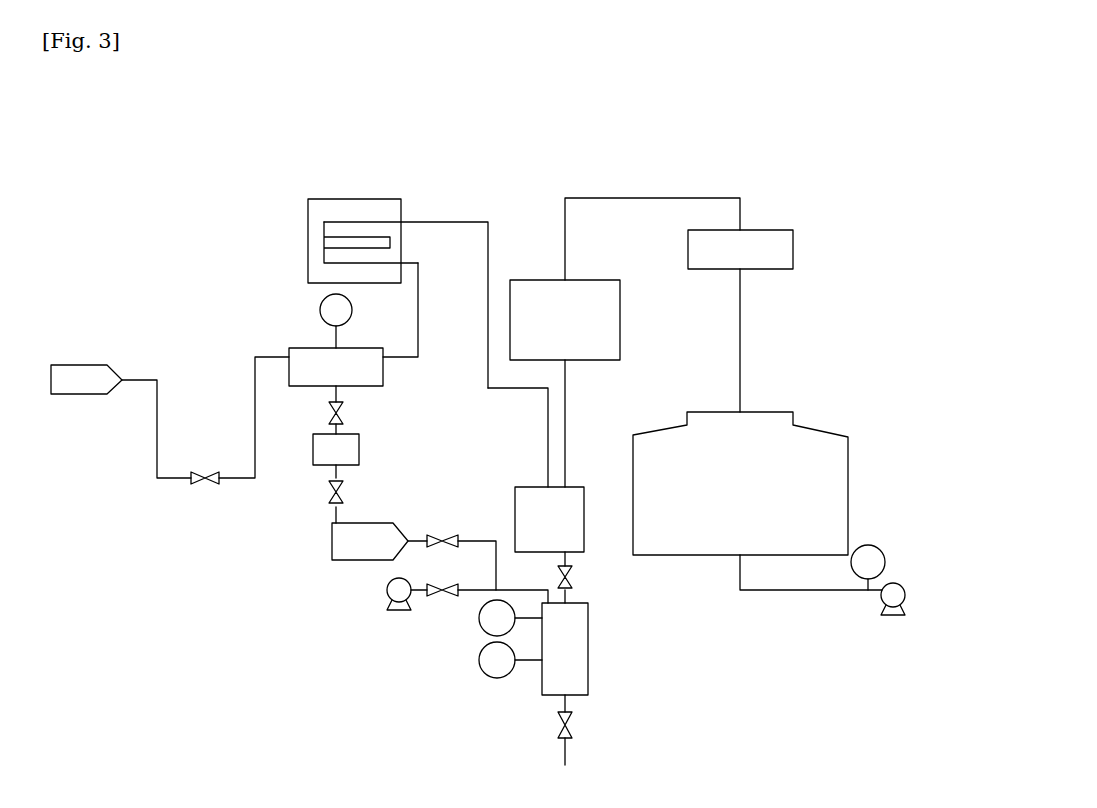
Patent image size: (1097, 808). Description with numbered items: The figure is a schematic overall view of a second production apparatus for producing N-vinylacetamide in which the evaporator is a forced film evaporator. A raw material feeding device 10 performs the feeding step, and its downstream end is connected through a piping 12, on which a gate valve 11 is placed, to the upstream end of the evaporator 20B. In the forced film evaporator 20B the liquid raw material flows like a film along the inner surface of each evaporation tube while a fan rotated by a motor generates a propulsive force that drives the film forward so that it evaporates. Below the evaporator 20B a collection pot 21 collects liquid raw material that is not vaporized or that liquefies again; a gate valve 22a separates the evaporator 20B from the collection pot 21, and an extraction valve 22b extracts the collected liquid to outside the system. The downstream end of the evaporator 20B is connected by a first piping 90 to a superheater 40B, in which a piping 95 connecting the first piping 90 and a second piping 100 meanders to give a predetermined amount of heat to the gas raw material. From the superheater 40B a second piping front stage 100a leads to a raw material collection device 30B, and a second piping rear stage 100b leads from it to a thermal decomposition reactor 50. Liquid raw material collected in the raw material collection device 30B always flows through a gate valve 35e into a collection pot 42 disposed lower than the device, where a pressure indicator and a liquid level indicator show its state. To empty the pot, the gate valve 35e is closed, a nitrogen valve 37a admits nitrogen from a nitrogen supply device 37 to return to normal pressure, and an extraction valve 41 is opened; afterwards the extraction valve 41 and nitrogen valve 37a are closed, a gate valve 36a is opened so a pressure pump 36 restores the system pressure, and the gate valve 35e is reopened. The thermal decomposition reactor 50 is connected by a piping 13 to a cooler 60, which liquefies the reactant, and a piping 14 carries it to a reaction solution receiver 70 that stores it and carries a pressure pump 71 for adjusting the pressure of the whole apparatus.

The raw material feeding device 10 is at (80, 365).
The gate valve 11 is at (205, 472).
The piping 12 is at (165, 493).
The piping 13 is at (710, 198).
The piping 14 is at (740, 338).
The evaporator 20B is at (383, 370).
The collection pot 21 is at (313, 451).
The gate valve 22a is at (329, 413).
The extraction valve 22b is at (329, 492).
The raw material collection device 30B is at (515, 515).
The gate valve 35e is at (572, 580).
The pressure pump 36 is at (387, 590).
The gate valve 36a is at (442, 597).
The nitrogen supply device 37 is at (332, 541).
The nitrogen valve 37a is at (442, 535).
The superheater 40B is at (357, 199).
The extraction valve 41 is at (572, 726).
The collection pot 42 is at (542, 680).
The thermal decomposition reactor 50 is at (620, 322).
The cooler 60 is at (688, 252).
The reaction solution receiver 70 is at (633, 460).
The pressure pump 71 is at (905, 597).
The first piping 90 is at (418, 303).
The piping 95 is at (324, 255).
The second piping 100 is at (444, 214).
The second piping front stage 100a is at (548, 431).
The second piping rear stage 100b is at (565, 396).